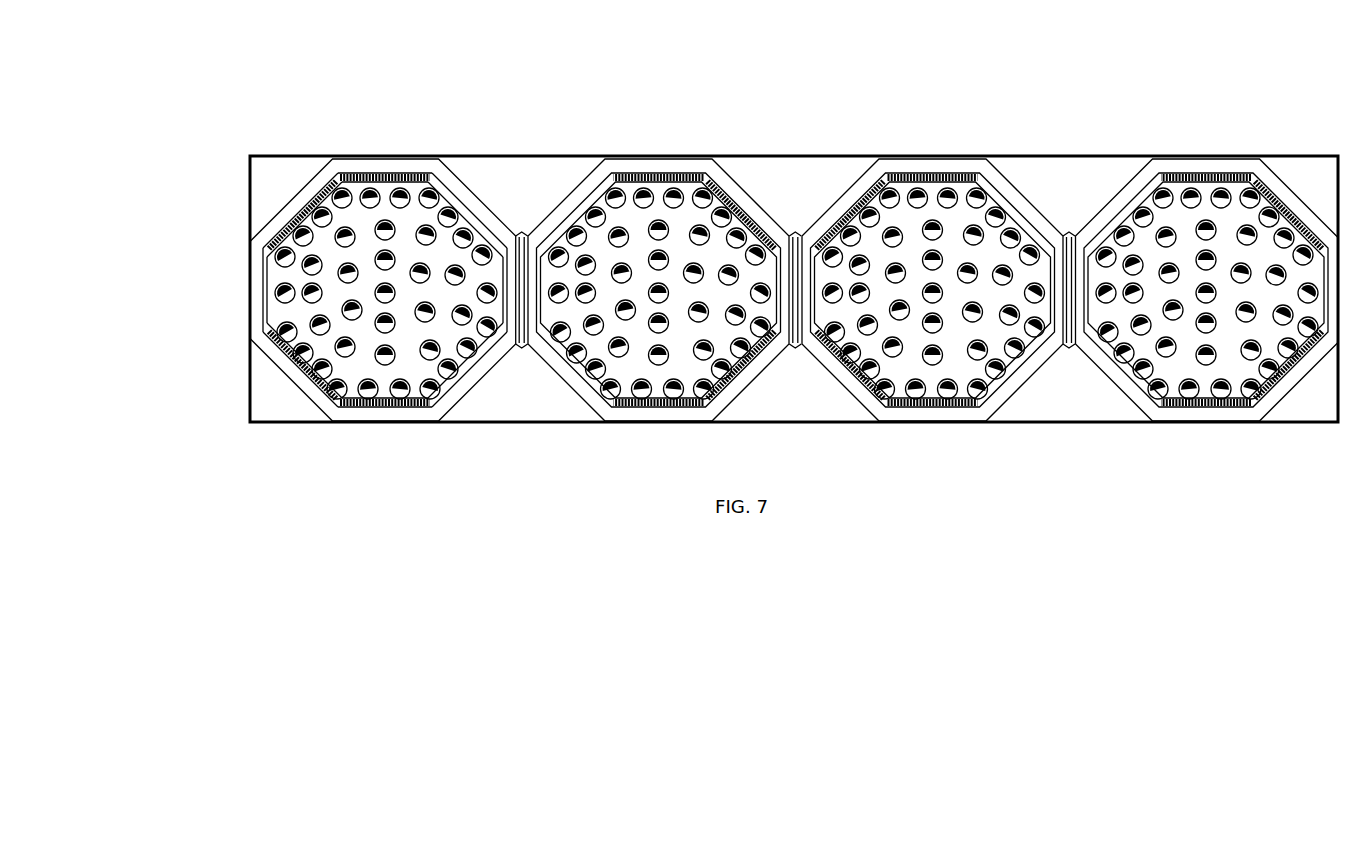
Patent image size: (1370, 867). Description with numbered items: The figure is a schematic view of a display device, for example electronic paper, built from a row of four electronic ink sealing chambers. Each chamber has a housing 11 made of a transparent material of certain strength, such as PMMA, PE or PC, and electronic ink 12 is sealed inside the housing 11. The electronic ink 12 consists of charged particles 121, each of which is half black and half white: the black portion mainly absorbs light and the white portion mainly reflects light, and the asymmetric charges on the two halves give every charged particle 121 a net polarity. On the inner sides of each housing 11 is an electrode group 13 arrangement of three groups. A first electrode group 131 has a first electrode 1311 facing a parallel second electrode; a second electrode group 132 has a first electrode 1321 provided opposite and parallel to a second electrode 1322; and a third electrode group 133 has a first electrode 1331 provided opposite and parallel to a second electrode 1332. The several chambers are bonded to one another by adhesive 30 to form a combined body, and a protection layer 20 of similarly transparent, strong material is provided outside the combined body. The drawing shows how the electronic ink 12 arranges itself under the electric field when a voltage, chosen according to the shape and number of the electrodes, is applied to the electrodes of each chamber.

The housing 11 is at (744, 290).
The electronic ink 12 is at (737, 293).
The charged particle 121 is at (728, 289).
The electrode group 13 is at (719, 289).
The first electrode group 131 is at (300, 296).
The first electrode 1311 is at (300, 296).
The second electrode group 132 is at (310, 326).
The first electrode 1321 is at (227, 183).
The second electrode 1322 is at (396, 432).
The third electrode group 133 is at (308, 242).
The first electrode 1331 is at (407, 147).
The second electrode 1332 is at (226, 385).
The protection layer 20 is at (794, 256).
The adhesive 30 is at (795, 211).